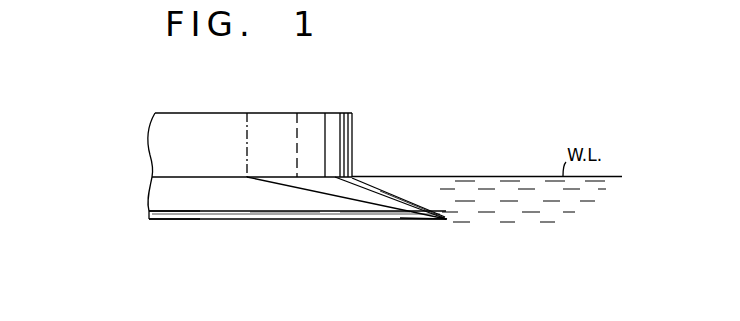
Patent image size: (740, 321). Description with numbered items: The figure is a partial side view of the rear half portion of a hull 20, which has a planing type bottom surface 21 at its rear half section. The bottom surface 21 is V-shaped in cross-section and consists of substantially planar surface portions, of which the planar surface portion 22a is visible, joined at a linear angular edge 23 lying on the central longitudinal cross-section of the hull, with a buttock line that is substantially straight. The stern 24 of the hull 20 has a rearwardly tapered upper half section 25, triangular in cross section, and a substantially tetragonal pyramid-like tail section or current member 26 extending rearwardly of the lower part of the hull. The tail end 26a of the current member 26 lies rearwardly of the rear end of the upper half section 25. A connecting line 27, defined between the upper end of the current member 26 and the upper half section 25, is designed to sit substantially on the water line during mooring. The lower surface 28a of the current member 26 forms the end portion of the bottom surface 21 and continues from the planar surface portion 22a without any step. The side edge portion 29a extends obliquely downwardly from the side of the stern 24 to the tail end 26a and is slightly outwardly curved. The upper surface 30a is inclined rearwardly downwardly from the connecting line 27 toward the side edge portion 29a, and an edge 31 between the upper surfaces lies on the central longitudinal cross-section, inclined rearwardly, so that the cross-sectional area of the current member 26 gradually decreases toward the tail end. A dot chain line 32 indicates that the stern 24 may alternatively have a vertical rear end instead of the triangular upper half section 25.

The hull 20 is at (139, 144).
The bottom surface 21 is at (237, 220).
The planar surface portion 22a is at (179, 205).
The linear angular edge 23 is at (292, 218).
The stern 24 is at (207, 127).
The upper half section 25 is at (302, 128).
The current member 26 is at (408, 221).
The tail end 26a is at (447, 219).
The connecting line 27 is at (338, 176).
The lower surface 28a is at (372, 213).
The side edge portion 29a is at (279, 183).
The upper surface 30a is at (386, 197).
The edge 31 is at (416, 202).
The dot chain line 32 is at (250, 128).